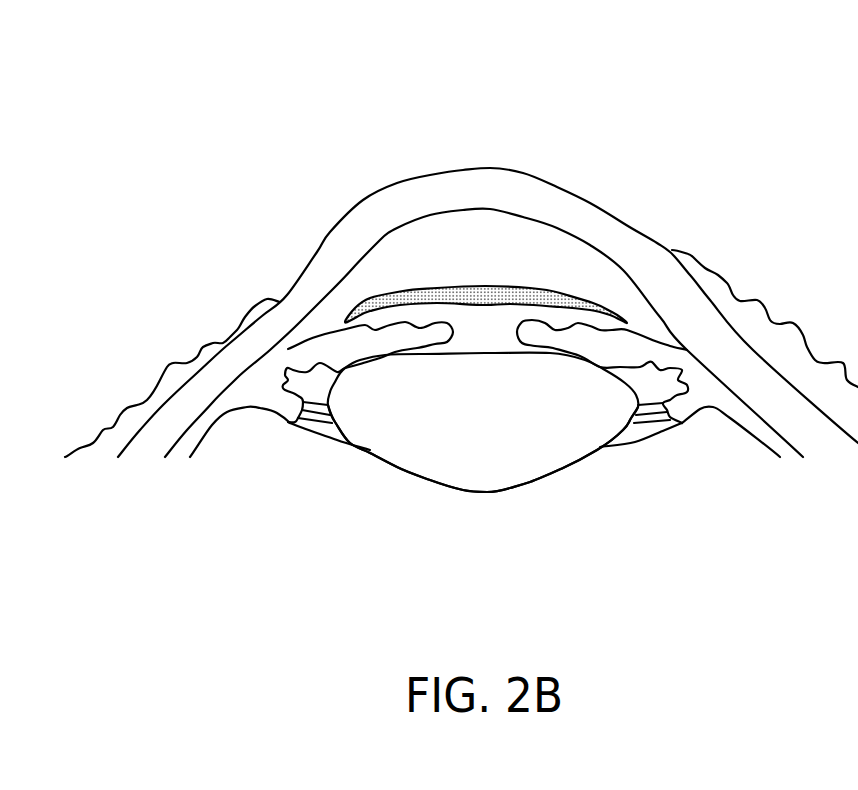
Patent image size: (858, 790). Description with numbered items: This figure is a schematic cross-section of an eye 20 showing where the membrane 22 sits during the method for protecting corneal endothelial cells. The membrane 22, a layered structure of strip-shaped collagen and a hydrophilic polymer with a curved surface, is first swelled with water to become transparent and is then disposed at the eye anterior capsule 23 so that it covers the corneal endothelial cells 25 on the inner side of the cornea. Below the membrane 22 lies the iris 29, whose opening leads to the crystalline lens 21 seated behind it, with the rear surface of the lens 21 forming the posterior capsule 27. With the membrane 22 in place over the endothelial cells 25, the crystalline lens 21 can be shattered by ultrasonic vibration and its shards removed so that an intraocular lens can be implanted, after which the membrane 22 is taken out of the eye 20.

The eye 20 is at (770, 87).
The crystalline lens 21 is at (483, 422).
The membrane 22 is at (557, 256).
The eye anterior capsule 23 is at (402, 260).
The corneal endothelial cells 25 is at (322, 287).
The posterior lens capsule 27 is at (435, 485).
The iris 29 is at (627, 350).